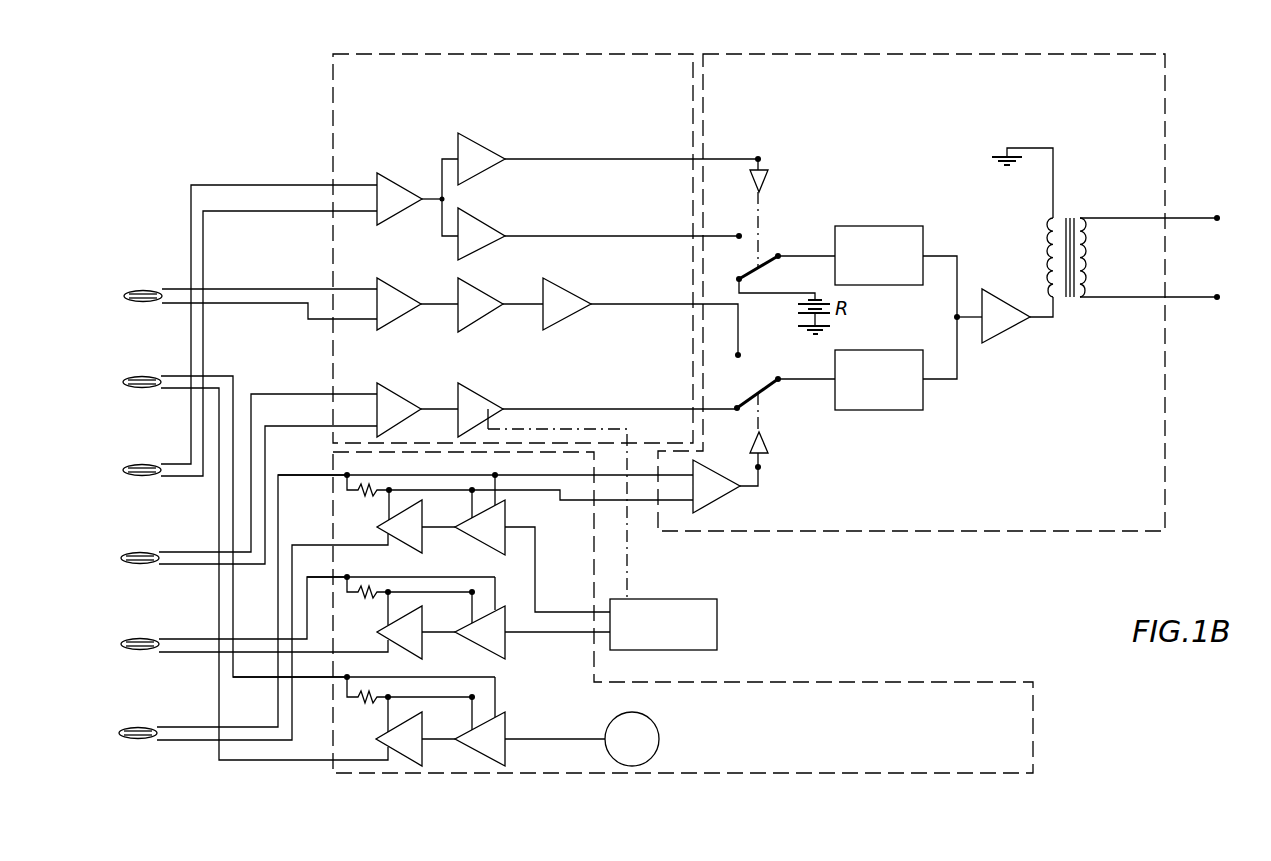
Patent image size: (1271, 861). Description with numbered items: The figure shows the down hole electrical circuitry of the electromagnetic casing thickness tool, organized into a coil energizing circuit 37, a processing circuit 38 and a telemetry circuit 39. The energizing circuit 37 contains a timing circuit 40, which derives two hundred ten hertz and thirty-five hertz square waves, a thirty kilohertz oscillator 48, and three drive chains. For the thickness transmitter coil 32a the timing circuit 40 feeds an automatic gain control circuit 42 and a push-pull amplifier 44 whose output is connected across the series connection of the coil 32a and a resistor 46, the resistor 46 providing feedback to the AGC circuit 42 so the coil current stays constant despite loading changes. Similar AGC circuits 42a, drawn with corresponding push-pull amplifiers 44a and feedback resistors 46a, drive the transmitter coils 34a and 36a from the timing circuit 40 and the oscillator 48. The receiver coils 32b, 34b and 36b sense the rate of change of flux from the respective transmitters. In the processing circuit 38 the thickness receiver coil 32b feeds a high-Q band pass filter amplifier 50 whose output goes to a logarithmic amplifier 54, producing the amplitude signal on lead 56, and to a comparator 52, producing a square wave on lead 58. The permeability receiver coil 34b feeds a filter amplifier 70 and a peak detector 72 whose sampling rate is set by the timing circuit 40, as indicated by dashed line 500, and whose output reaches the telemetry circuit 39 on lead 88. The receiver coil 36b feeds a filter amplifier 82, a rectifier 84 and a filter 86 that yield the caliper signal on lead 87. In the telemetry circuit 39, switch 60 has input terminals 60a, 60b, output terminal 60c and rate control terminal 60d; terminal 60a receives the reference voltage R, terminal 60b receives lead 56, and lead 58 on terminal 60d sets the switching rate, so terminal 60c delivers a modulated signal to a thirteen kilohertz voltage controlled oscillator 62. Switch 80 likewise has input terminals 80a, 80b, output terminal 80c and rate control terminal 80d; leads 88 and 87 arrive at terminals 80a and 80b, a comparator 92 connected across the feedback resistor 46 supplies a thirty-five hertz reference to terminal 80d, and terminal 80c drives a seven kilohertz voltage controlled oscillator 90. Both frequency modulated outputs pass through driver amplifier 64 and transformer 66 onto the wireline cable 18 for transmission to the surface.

The wireline cable 18 is at (1217, 213).
The thickness transmitter coil 32a is at (119, 733).
The thickness receiver coil 32b is at (123, 470).
The transmitter coil 34a is at (121, 644).
The permeability receiver coil 34b is at (121, 558).
The caliper transmitter coil 36a is at (123, 382).
The receiver coil 36b is at (124, 296).
The coil energizing circuit 37 is at (845, 682).
The processing circuit 38 is at (359, 54).
The telemetry circuit 39 is at (780, 54).
The timing circuit 40 is at (720, 627).
The automatic gain control circuit 42 is at (486, 541).
The AGC circuits 42a is at (507, 652).
The push-pull amplifier 44 is at (423, 509).
The push-pull amplifier 44a is at (422, 652).
The resistor 46 is at (368, 496).
The resistor 46a is at (368, 598).
The 30 kHz oscillator 48 is at (612, 722).
The band pass filter amplifier 50 is at (394, 175).
The comparator 52 is at (489, 171).
The logarithmic amplifier 54 is at (490, 219).
The lead 56 is at (583, 235).
The lead 58 is at (600, 161).
The switch 60 is at (781, 226).
The signal input terminal 60a is at (737, 278).
The signal input terminal 60b is at (738, 234).
The output terminal 60c is at (780, 258).
The rate control terminal 60d is at (761, 158).
The voltage controlled oscillator 62 is at (882, 226).
The driver amplifier 64 is at (1000, 296).
The transformer 66 is at (1077, 210).
The filter amplifier 70 is at (397, 389).
The peak detector 72 is at (488, 391).
The switch 80 is at (767, 375).
The input terminal 80a is at (737, 411).
The input terminal 80b is at (740, 354).
The output terminal 80c is at (780, 382).
The rate control terminal 80d is at (762, 468).
The filter amplifier 82 is at (398, 283).
The rectifier 84 is at (488, 290).
The filter 86 is at (578, 290).
The lead 87 is at (648, 306).
The lead 88 is at (627, 407).
The second voltage controlled oscillator 90 is at (898, 350).
The comparator 92 is at (722, 497).
The dashed line 500 is at (628, 585).